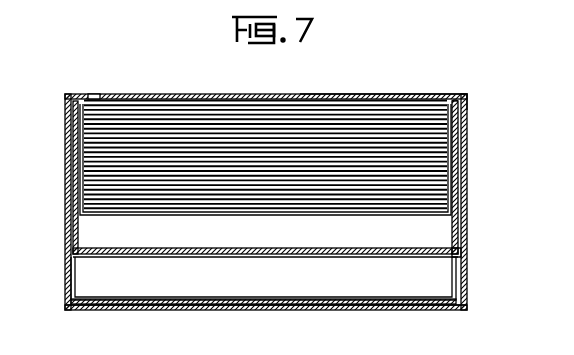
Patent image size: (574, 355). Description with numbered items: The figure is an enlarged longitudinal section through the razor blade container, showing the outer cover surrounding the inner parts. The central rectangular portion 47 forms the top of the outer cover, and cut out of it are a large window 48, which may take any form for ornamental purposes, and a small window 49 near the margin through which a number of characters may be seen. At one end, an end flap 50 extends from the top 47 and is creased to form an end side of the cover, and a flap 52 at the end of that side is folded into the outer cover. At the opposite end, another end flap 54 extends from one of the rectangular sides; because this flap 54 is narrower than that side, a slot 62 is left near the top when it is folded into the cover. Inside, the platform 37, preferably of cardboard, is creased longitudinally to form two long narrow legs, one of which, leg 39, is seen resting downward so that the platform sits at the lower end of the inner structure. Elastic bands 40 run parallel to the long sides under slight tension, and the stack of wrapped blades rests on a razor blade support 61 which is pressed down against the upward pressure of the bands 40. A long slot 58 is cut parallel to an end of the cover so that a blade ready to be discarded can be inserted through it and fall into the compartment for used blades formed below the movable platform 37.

The elastic bands 40 is at (75, 136).
The end flap 50 is at (76, 172).
The end flap 54 is at (470, 146).
The platform 37 is at (72, 246).
The long slot 58 is at (466, 258).
The razor blade support 61 is at (86, 203).
The leg 39 is at (68, 300).
The flap 52 is at (78, 309).
The small window 49 is at (99, 94).
The large window 48 is at (420, 96).
The central rectangular portion 47 is at (431, 96).
The slot 62 is at (468, 107).